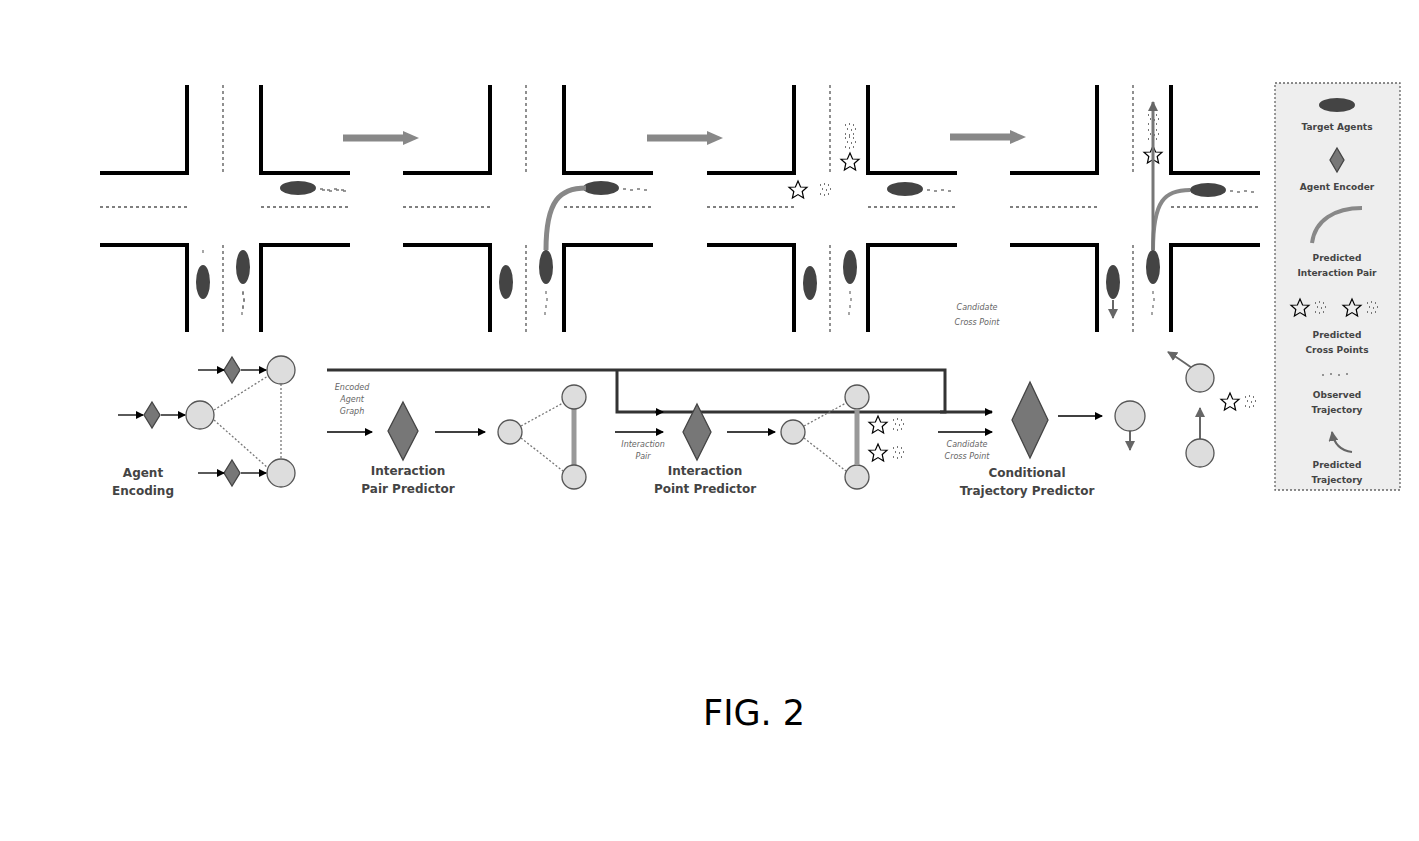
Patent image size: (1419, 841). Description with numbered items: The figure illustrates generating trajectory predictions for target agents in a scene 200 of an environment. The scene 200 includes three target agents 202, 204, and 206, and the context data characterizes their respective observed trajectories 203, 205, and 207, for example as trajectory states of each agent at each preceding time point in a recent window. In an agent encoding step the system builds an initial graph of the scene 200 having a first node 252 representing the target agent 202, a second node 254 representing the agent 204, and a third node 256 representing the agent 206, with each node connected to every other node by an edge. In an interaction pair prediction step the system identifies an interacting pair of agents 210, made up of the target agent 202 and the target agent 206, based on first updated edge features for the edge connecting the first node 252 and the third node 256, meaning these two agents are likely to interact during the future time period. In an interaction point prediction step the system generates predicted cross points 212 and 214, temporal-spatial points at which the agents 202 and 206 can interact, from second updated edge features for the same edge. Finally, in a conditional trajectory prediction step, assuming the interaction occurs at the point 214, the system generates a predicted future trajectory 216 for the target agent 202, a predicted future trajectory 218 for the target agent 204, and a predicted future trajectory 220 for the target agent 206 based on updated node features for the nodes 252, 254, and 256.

The scene 200 is at (144, 80).
The target agent 202 is at (298, 173).
The observed trajectory 203 is at (348, 193).
The target agent 204 is at (187, 290).
The observed trajectory 205 is at (207, 250).
The target agent 206 is at (252, 265).
The observed trajectory 207 is at (252, 307).
The interacting pair of agents 210 is at (553, 203).
The predicted cross point 212 is at (798, 172).
The predicted cross point 214 is at (858, 153).
The predicted future trajectory 216 is at (1160, 148).
The predicted future trajectory 218 is at (1113, 305).
The predicted future trajectory 220 is at (1150, 203).
The first node 252 is at (297, 363).
The second node 254 is at (190, 427).
The third node 256 is at (280, 488).